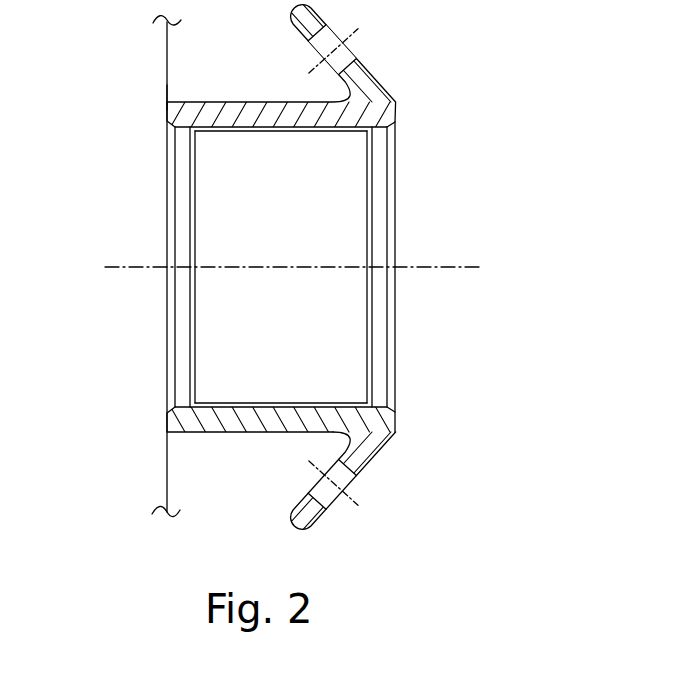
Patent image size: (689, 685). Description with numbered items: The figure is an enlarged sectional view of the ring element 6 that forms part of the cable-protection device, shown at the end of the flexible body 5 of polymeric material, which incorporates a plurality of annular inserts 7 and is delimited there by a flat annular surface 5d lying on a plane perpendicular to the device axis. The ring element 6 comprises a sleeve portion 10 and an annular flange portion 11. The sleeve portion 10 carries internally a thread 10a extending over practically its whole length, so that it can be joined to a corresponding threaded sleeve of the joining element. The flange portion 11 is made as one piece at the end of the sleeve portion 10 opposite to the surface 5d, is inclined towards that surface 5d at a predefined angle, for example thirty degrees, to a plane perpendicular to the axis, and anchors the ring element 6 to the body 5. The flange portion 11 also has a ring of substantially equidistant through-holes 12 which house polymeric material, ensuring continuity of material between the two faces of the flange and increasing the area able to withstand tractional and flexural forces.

The flexible body 5 is at (167, 63).
The flat annular surface 5d is at (156, 97).
The ring element 6 is at (452, 57).
The annular inserts 7 is at (447, 267).
The sleeve portion 10 is at (255, 112).
The thread 10a is at (254, 133).
The annular flange portion 11 is at (322, 512).
The through-holes 12 is at (333, 484).